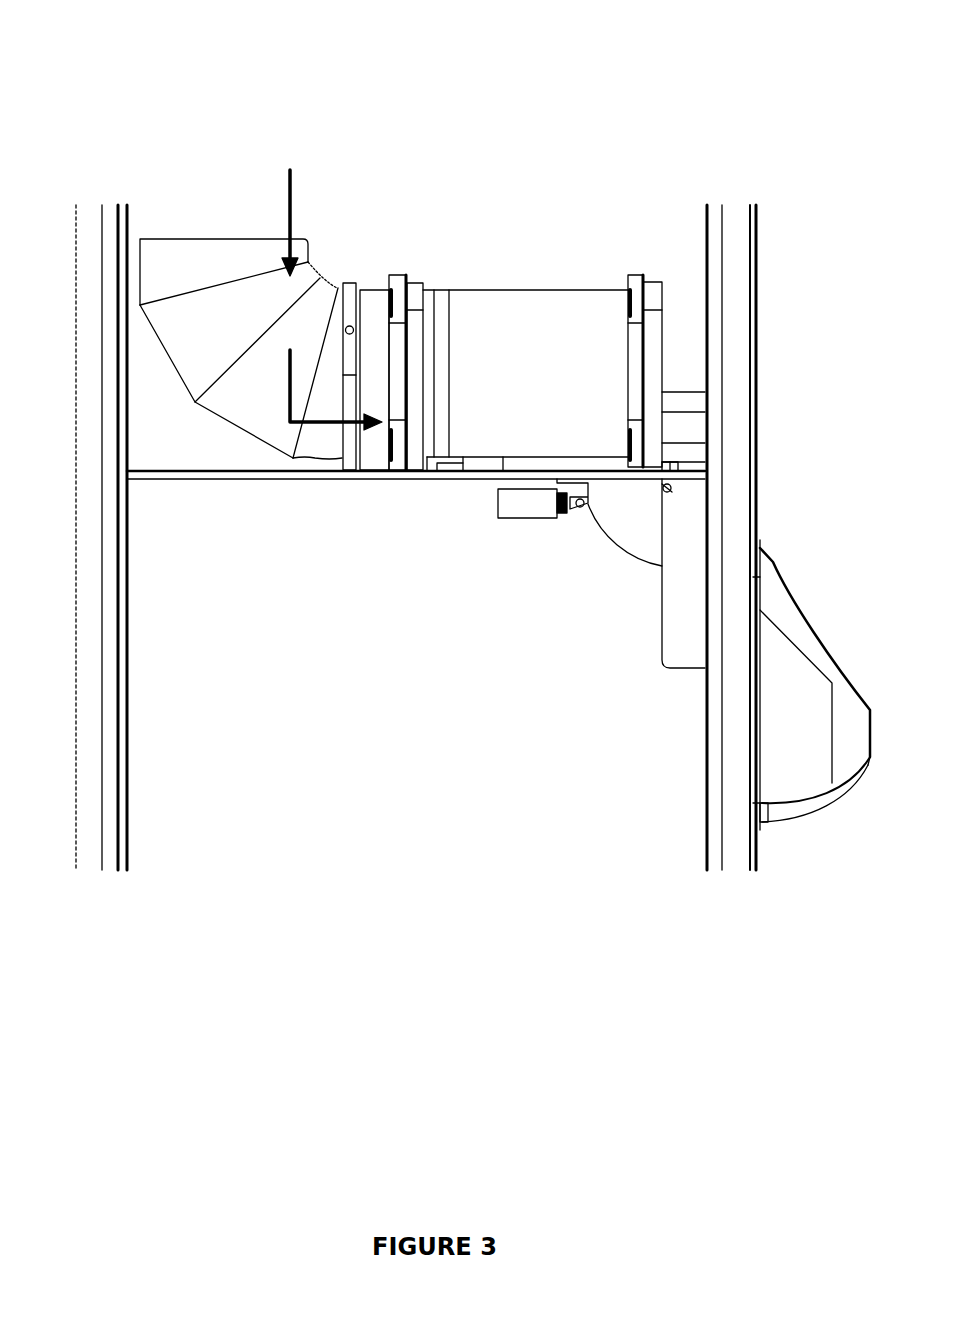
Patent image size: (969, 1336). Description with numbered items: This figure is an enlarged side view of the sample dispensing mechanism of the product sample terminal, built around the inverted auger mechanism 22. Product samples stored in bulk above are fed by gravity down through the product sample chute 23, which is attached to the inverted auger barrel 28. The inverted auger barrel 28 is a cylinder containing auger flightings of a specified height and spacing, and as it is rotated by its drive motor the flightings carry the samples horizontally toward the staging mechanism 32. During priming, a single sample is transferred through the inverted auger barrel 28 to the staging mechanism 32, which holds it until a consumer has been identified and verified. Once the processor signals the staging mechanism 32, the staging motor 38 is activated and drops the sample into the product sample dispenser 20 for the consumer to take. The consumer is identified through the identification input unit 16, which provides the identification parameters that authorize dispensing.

The inverted auger mechanism 22 is at (612, 150).
The product sample chute 23 is at (183, 242).
The inverted auger barrel 28 is at (507, 312).
The staging motor 38 is at (508, 522).
The staging mechanism 32 is at (618, 547).
The product sample dispenser 20 is at (828, 637).
The identification input unit 16 is at (797, 812).